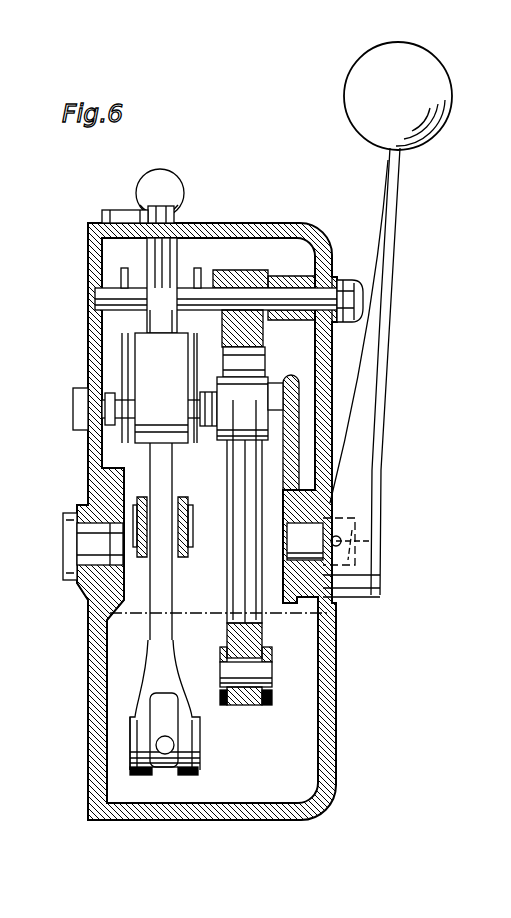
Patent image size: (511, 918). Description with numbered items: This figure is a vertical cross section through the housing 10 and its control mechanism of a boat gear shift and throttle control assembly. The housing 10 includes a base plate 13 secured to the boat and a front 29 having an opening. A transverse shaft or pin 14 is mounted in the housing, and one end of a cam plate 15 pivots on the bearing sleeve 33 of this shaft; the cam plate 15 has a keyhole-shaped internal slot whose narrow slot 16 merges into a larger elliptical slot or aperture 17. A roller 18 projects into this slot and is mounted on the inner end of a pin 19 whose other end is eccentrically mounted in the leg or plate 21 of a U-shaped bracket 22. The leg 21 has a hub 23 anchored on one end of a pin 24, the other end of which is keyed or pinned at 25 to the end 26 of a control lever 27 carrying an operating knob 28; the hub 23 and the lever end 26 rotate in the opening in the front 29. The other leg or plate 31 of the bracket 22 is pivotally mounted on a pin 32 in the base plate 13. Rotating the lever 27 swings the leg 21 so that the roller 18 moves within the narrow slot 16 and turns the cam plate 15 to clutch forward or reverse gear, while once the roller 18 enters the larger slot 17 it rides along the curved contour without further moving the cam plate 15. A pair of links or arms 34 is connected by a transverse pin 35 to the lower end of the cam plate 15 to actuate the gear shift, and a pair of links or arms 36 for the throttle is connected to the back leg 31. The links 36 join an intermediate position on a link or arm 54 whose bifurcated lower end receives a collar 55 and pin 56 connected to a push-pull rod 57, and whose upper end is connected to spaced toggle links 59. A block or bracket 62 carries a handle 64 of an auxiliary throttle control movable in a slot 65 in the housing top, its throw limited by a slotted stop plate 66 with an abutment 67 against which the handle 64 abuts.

The housing 10 is at (240, 226).
The base plate 13 is at (87, 263).
The transverse shaft or pin 14 is at (334, 283).
The cam plate 15 is at (226, 478).
The narrow slot 16 is at (250, 366).
The elliptical slot or aperture 17 is at (228, 588).
The roller 18 is at (252, 388).
The pin 19 is at (318, 376).
The leg or plate 21 is at (300, 432).
The U-shaped bracket 22 is at (300, 460).
The hub 23 is at (336, 602).
The pin 24 is at (325, 520).
The key or pin connection 25 is at (342, 541).
The end of control lever 26 is at (378, 589).
The control lever 27 is at (382, 410).
The operating handle or knob 28 is at (346, 80).
The front of housing 29 is at (333, 698).
The leg or plate 31 is at (112, 597).
The pin 32 is at (95, 547).
The bearing sleeve 33 is at (306, 287).
The links or arms 34 is at (232, 706).
The transverse pin 35 is at (236, 672).
The links or arms 36 is at (135, 505).
The link or arm 54 is at (150, 650).
The collar 55 is at (160, 778).
The pin 56 is at (131, 723).
The control or push-pull rod 57 is at (174, 745).
The toggle links 59 is at (122, 276).
The block or bracket 62 is at (176, 369).
The handle 64 is at (175, 237).
The slot 65 is at (195, 230).
The slotted stop plate 66 is at (98, 218).
The abutment 67 is at (150, 215).